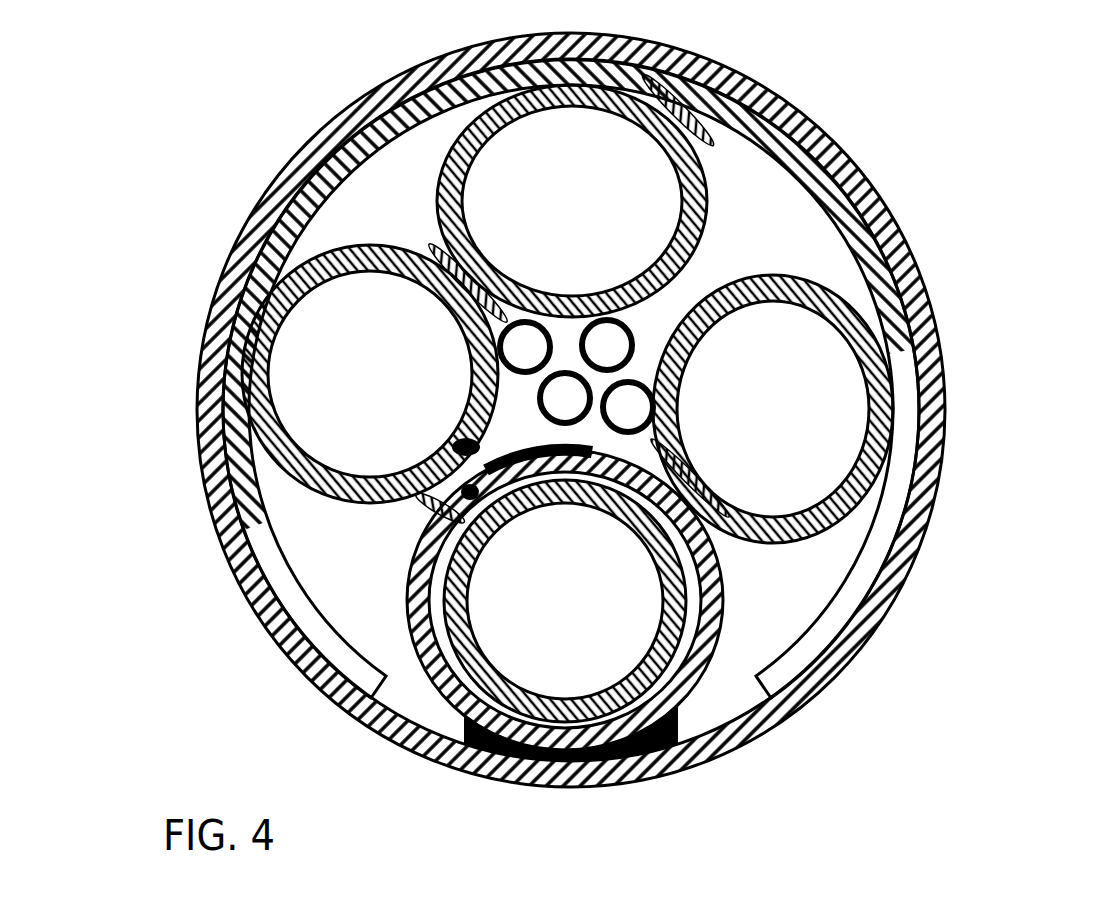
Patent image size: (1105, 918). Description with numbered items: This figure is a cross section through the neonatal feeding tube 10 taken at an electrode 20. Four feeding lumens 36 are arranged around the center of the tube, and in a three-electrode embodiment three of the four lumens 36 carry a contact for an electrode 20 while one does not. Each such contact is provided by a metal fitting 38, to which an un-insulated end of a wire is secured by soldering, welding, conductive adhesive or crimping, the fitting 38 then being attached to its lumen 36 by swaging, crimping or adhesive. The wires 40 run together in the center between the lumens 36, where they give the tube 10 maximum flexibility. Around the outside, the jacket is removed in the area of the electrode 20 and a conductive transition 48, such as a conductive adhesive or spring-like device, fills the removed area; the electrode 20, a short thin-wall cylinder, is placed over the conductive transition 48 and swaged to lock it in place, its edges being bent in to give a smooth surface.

The neonatal feeding tube 10 is at (1003, 281).
The electrode 20 is at (820, 690).
The feeding lumen 36 is at (450, 138).
The metal fitting 38 is at (407, 567).
The wires 40 is at (640, 378).
The conductive transition 48 is at (677, 702).